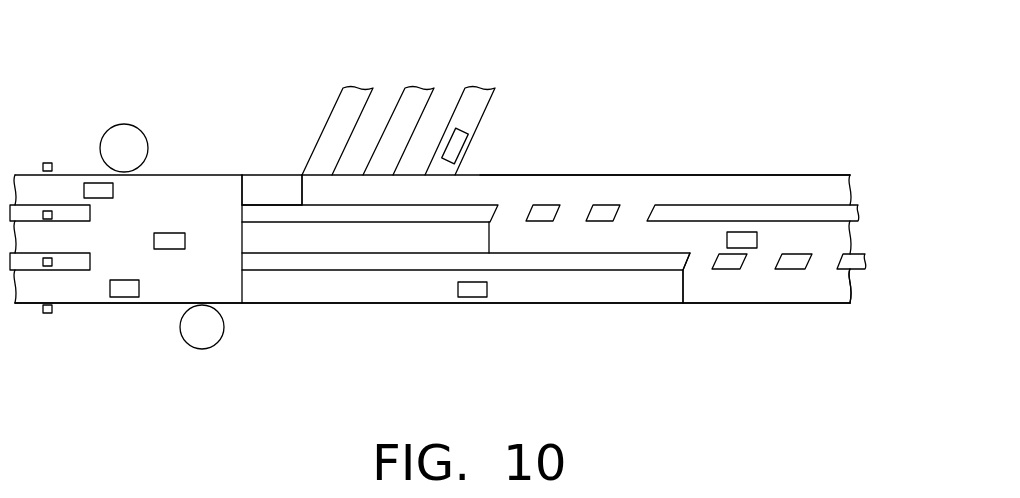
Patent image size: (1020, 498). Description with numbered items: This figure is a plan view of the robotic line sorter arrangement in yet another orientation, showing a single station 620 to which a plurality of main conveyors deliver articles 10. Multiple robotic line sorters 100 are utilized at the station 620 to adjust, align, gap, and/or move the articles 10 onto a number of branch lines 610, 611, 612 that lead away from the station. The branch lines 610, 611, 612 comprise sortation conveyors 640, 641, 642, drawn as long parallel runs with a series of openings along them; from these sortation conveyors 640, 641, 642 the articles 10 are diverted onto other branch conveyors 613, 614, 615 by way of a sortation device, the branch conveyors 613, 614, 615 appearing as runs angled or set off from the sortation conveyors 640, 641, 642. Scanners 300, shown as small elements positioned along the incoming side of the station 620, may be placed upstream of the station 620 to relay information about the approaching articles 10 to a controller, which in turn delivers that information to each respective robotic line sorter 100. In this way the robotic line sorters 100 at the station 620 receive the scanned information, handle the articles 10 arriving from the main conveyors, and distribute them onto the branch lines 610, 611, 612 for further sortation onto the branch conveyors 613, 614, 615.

The article 10 is at (125, 297).
The robotic line sorter 100 is at (125, 124).
The scanner 300 is at (47, 163).
The branch line 610 is at (420, 304).
The branch line 611 is at (332, 254).
The branch line 612 is at (272, 174).
The branch conveyor 613 is at (683, 263).
The branch conveyor 614 is at (655, 215).
The branch conveyor 615 is at (337, 110).
The station 620 is at (171, 90).
The sortation conveyor 640 is at (763, 304).
The sortation conveyor 641 is at (587, 254).
The sortation conveyor 642 is at (481, 174).